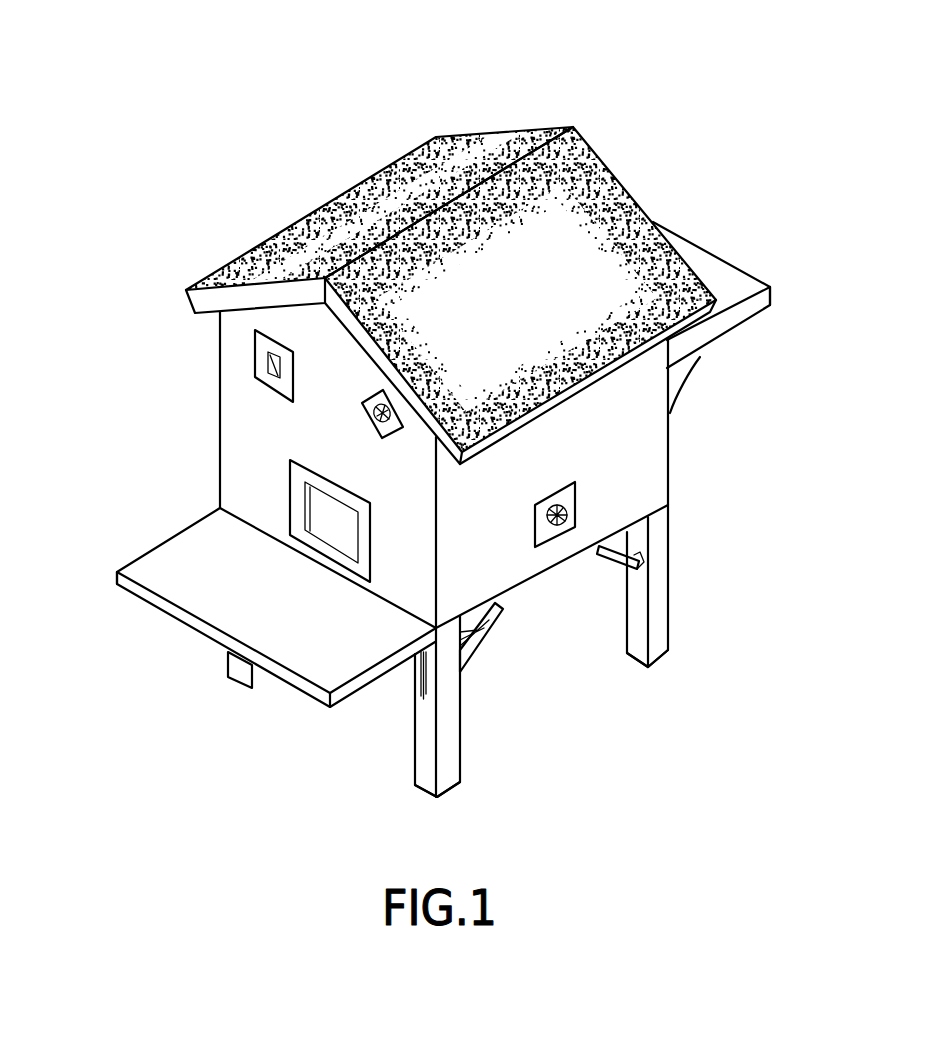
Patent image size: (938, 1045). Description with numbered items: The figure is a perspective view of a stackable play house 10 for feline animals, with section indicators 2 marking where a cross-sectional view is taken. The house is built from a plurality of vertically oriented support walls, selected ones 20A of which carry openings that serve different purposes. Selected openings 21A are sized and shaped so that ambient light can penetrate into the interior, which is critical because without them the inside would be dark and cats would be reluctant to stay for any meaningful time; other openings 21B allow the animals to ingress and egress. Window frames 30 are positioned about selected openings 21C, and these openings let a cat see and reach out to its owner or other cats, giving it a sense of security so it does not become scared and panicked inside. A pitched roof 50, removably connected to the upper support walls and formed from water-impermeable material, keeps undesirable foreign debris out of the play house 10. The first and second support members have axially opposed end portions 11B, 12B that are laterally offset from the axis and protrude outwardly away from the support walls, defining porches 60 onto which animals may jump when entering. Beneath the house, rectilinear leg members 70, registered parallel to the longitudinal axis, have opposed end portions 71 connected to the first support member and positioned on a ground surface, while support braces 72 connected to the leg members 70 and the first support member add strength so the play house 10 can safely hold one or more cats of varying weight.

The play house 10 is at (803, 130).
The pitched roof 50 is at (577, 183).
The porches 60 is at (353, 655).
The rectilinear leg members 70 is at (453, 730).
The opposed end portions of the leg members 71 is at (452, 788).
The support braces 72 is at (610, 555).
The selected support walls 20A is at (238, 418).
The light-admitting openings 21A is at (362, 413).
The ingress and egress openings 21B is at (323, 517).
The framed openings 21C is at (257, 373).
The window frames 30 is at (253, 343).
The end portion of the first support member 11B is at (180, 605).
The end portion of the second support member 12B is at (772, 290).
The section line for FIG. 2 is at (161, 523).